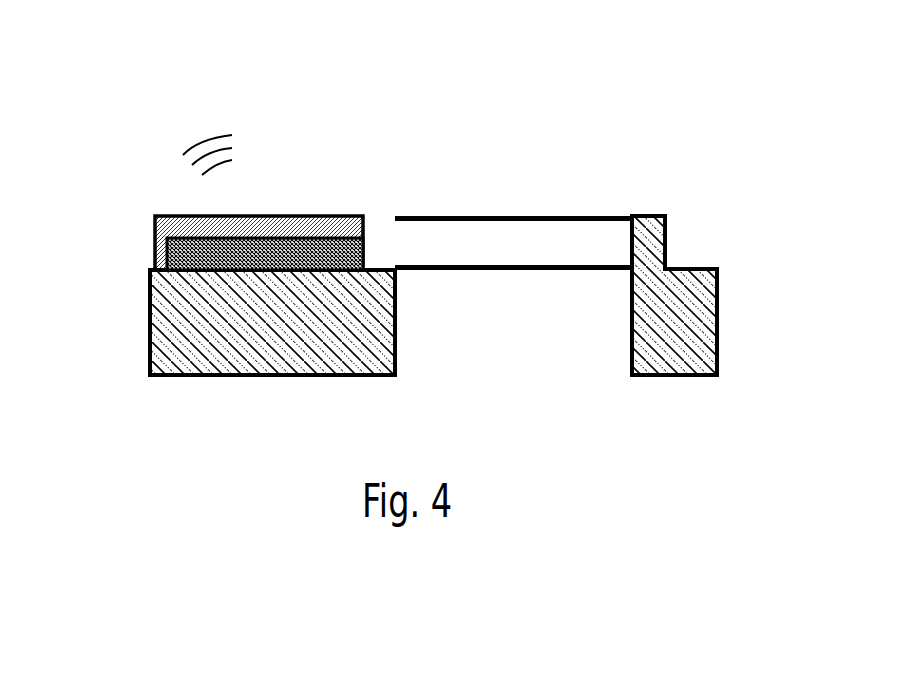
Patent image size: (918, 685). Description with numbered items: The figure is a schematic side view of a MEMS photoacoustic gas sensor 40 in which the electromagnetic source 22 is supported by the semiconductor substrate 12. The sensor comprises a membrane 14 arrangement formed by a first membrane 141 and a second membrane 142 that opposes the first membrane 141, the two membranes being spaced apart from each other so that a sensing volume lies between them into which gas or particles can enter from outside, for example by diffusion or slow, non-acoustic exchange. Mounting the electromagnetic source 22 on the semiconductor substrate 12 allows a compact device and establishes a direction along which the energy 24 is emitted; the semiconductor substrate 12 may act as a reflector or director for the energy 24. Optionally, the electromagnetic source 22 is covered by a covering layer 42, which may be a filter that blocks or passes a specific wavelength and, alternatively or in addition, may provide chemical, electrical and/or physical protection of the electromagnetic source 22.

The MEMS photoacoustic gas sensor 40 is at (788, 25).
The semiconductor substrate 12 is at (153, 336).
The membrane 14 is at (513, 246).
The first membrane 141 is at (543, 270).
The second membrane 142 is at (538, 216).
The electromagnetic source 22 is at (330, 245).
The energy 24 is at (245, 144).
The covering layer 42 is at (153, 221).